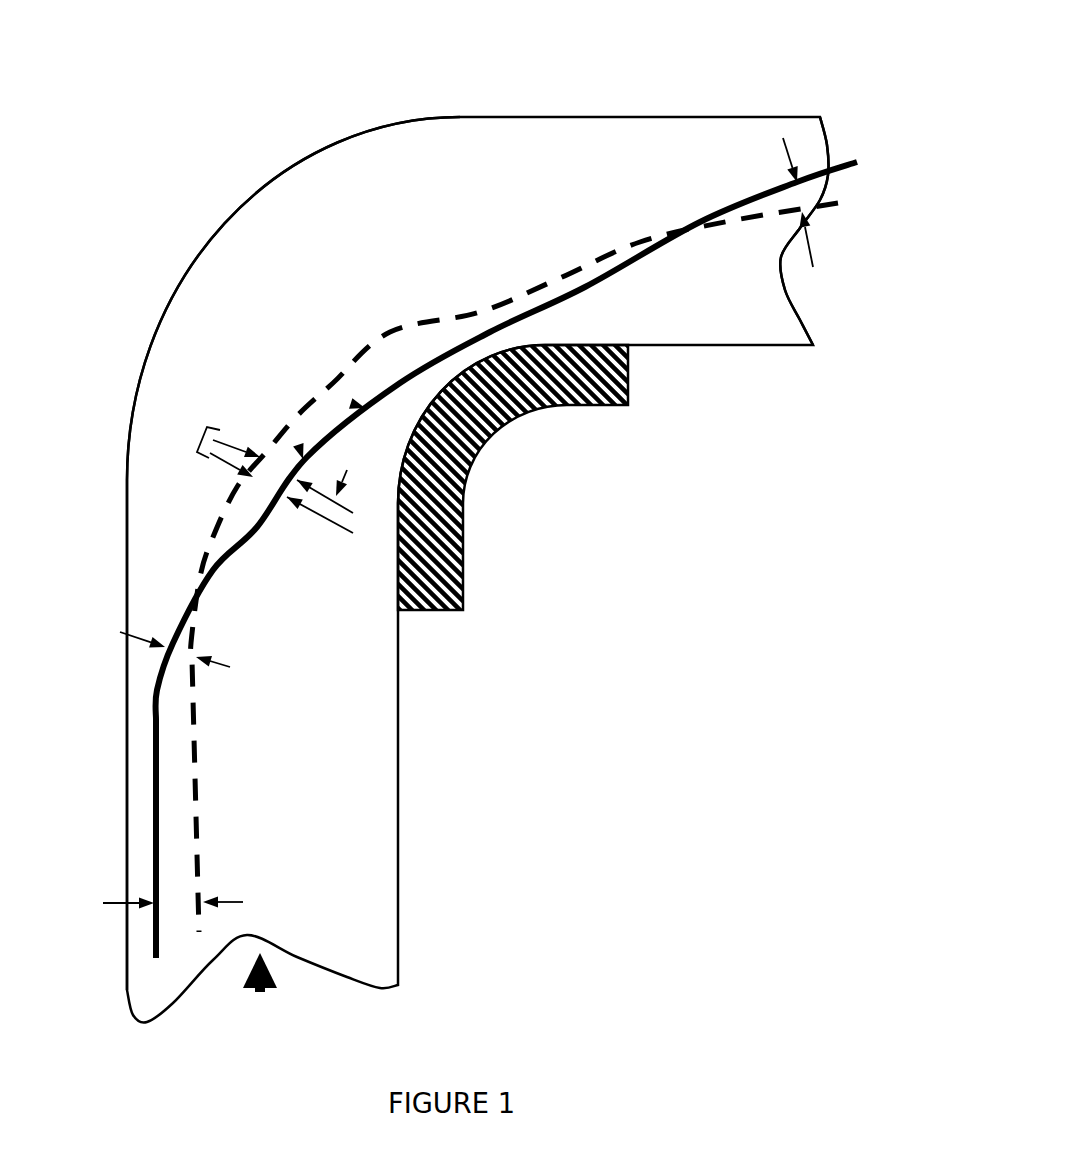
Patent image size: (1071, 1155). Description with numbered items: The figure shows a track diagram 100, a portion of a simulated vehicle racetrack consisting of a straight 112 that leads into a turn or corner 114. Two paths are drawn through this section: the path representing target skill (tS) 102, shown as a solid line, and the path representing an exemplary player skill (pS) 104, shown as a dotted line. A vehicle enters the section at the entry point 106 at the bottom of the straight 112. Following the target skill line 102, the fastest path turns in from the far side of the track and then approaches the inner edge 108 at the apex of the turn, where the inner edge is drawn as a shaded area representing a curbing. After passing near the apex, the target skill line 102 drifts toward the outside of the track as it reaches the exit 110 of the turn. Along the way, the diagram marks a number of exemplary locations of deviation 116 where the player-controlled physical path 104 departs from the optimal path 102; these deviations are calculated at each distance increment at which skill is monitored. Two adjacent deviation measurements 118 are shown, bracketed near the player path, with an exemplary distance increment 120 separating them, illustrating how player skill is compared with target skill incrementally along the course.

The track diagram 100 is at (125, 44).
The target skill path (tS) 102 is at (585, 287).
The player skill path (pS) 104 is at (200, 742).
The entry point 106 is at (267, 996).
The inner edge 108 is at (468, 530).
The exit 110 is at (867, 147).
The straight 112 is at (212, 735).
The turn or corner 114 is at (317, 148).
The locations of deviation 116 is at (780, 172).
The adjacent deviation measurements 118 is at (200, 437).
The distance increment 120 is at (317, 529).